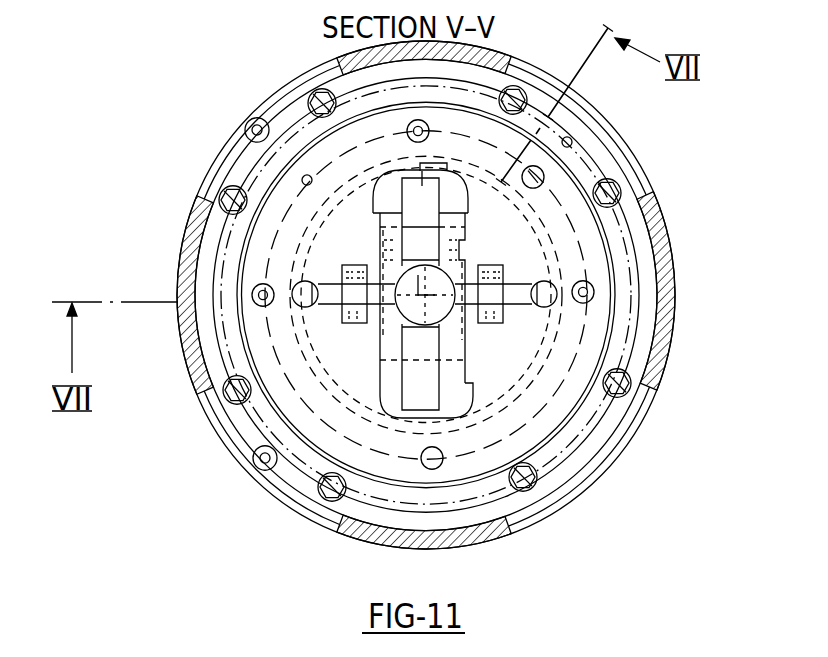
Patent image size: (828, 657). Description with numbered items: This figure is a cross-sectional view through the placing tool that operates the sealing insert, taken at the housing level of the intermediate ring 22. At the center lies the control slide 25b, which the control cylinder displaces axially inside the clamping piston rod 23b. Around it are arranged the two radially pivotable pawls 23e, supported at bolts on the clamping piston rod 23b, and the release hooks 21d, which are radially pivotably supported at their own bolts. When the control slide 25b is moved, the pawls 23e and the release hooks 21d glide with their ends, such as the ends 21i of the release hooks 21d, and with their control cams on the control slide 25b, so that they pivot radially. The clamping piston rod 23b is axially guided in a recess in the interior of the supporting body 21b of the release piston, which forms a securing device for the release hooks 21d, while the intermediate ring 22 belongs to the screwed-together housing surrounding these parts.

The intermediate ring 22 is at (338, 62).
The supporting body 21b is at (547, 198).
The release hooks 21d is at (322, 294).
The ends of the release hooks 21i is at (443, 366).
The clamping piston rod 23b is at (400, 375).
The pawls 23e is at (428, 396).
The control slide 25b is at (408, 282).